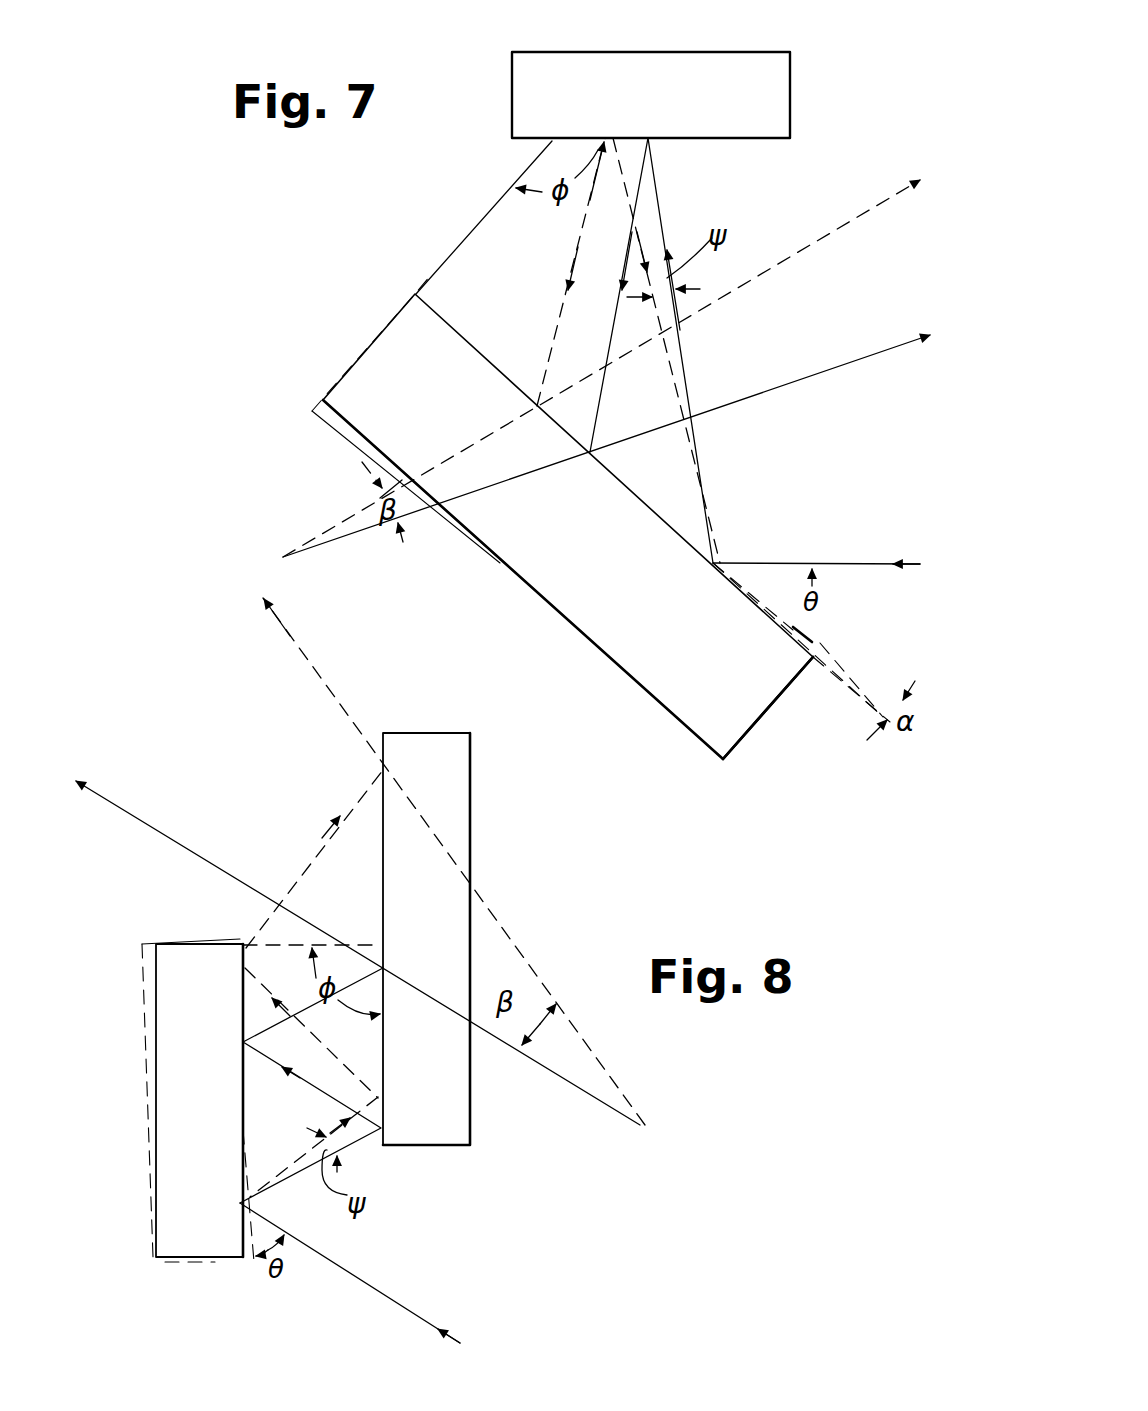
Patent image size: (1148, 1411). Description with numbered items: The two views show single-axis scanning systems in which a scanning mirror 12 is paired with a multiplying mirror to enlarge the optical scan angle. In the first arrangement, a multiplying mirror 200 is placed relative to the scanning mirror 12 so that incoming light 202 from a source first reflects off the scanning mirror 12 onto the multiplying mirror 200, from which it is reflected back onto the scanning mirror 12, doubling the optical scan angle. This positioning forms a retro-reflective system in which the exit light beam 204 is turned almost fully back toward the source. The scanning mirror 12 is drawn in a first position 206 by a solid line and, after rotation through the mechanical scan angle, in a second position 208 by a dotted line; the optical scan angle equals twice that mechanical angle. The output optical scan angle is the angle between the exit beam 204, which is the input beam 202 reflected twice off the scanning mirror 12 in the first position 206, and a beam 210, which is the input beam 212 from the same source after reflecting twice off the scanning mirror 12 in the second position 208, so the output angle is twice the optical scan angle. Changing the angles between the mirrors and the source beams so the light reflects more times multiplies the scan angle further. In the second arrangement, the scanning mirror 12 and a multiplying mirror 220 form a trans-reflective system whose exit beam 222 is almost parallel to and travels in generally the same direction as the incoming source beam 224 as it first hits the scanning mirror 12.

In FIG. 7, the scanning mirror 12 is at (748, 713).
In FIG. 8, the scanning mirror 12 is at (172, 1148).
In FIG. 7, the multiplying mirror 200 is at (733, 68).
In FIG. 7, the incoming light 202 is at (780, 563).
In FIG. 7, the exit light beam 204 is at (786, 382).
In FIG. 7, the first position 206 is at (742, 750).
In FIG. 7, the second position 208 is at (818, 625).
In FIG. 7, the beam 210 is at (765, 272).
In FIG. 7, the input beam 212 is at (712, 522).
In FIG. 8, the multiplying mirror 220 is at (452, 923).
In FIG. 8, the output beam 222 is at (215, 865).
In FIG. 8, the incoming source beam 224 is at (393, 1299).